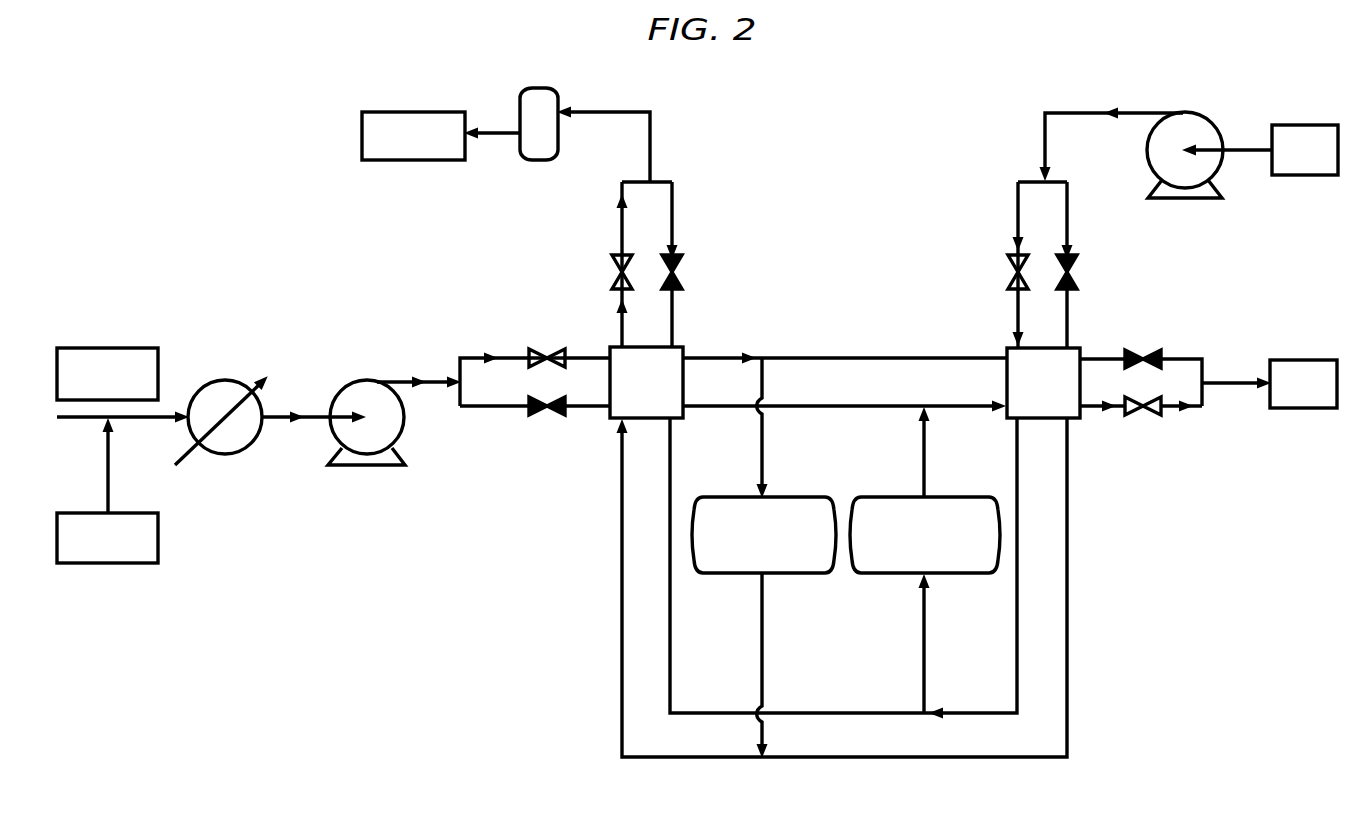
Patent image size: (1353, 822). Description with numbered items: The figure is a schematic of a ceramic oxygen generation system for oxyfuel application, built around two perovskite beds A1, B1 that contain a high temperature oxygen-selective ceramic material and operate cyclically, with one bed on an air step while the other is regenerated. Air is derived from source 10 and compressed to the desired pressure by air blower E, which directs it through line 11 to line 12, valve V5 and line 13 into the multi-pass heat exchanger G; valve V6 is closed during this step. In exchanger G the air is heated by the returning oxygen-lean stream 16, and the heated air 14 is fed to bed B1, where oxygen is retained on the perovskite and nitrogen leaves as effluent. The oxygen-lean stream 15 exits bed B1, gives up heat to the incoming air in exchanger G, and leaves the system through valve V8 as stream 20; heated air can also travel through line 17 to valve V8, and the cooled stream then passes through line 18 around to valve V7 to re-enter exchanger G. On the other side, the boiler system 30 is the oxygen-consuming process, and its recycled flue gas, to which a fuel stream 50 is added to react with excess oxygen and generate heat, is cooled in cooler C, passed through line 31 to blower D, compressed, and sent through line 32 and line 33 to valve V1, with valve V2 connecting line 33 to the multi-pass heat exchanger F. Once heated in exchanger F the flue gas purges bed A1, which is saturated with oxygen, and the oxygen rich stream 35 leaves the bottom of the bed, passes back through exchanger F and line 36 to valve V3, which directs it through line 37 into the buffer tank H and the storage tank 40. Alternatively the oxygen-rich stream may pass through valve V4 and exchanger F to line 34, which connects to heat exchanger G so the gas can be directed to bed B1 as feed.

The air source 10 is at (1260, 150).
The air line 11 is at (1072, 113).
The air line 12 is at (1015, 218).
The air line 13 is at (1013, 318).
The heated feed line 14 is at (926, 643).
The oxygen-lean stream line 15 is at (922, 476).
The returning oxygen-lean stream line 16 is at (940, 412).
The heated air line 17 is at (1087, 410).
The cooled air line 18 is at (1170, 412).
The outlet stream 20 is at (1269, 384).
The boiler system 30 is at (123, 385).
The oxygen line 31 is at (307, 410).
The blower outlet line 32 is at (405, 375).
The connecting line 33 is at (497, 352).
The connecting line 34 is at (715, 356).
The oxygen rich stream line 35 is at (765, 643).
The connecting line 36 is at (618, 333).
The oxygen-rich stream line 37 is at (600, 113).
The storage tank 40 is at (413, 136).
The fuel stream 50 is at (107, 490).
The perovskite bed A1 is at (764, 535).
The perovskite bed B1 is at (925, 535).
The cooler C is at (231, 455).
The blower D is at (370, 465).
The air blower E is at (1193, 200).
The multi-pass heat exchanger F is at (646, 382).
The multi-pass heat exchanger G is at (1043, 383).
The buffer tank H is at (511, 124).
The valve V1 is at (548, 348).
The valve V2 is at (537, 418).
The valve V3 is at (612, 278).
The valve V4 is at (690, 284).
The valve V5 is at (1010, 280).
The valve V6 is at (1085, 282).
The valve V7 is at (1145, 350).
The valve V8 is at (1133, 416).